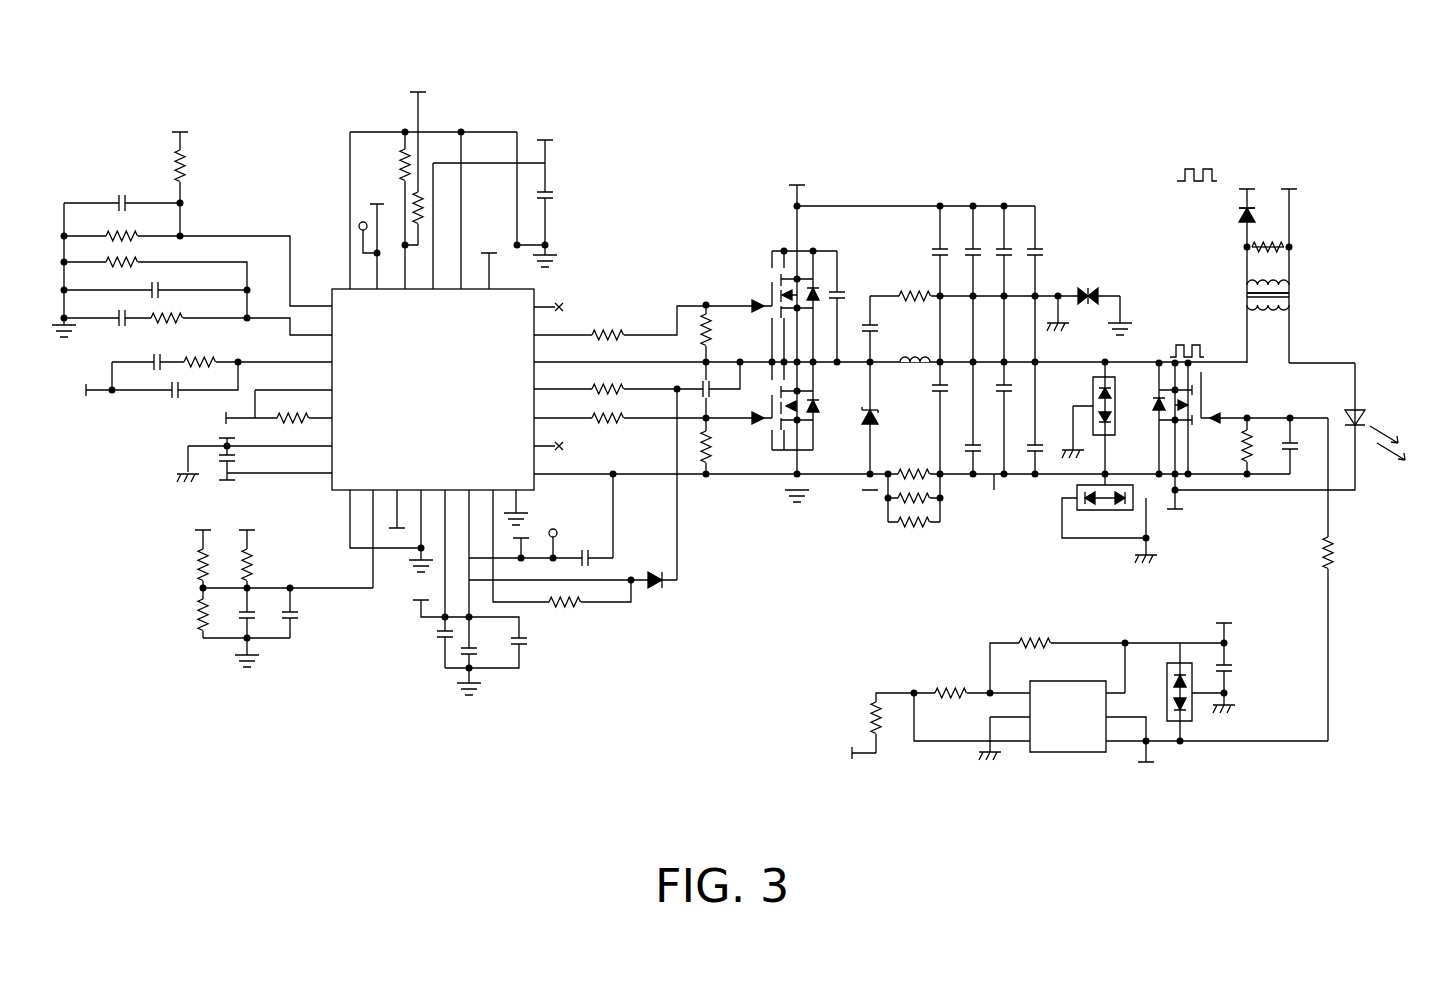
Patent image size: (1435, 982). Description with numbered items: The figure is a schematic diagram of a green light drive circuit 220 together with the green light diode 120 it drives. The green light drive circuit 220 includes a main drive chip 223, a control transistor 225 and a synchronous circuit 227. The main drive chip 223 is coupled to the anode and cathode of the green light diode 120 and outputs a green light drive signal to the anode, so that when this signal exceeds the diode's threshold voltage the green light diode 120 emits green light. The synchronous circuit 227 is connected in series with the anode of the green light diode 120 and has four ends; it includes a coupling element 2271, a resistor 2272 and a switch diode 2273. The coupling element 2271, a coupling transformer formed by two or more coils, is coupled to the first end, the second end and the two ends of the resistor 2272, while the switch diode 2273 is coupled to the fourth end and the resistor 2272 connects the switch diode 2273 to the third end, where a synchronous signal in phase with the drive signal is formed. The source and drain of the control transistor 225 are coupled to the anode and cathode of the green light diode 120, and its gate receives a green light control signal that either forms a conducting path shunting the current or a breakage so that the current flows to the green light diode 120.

The green light drive circuit 220 is at (1405, 51).
The main drive chip 223 is at (534, 293).
The control transistor 225 is at (1160, 408).
The synchronous circuit 227 is at (1301, 264).
The coupling element 2271 is at (1289, 295).
The resistor 2272 is at (1289, 247).
The switch diode 2273 is at (1255, 210).
The green light diode 120 is at (1375, 418).